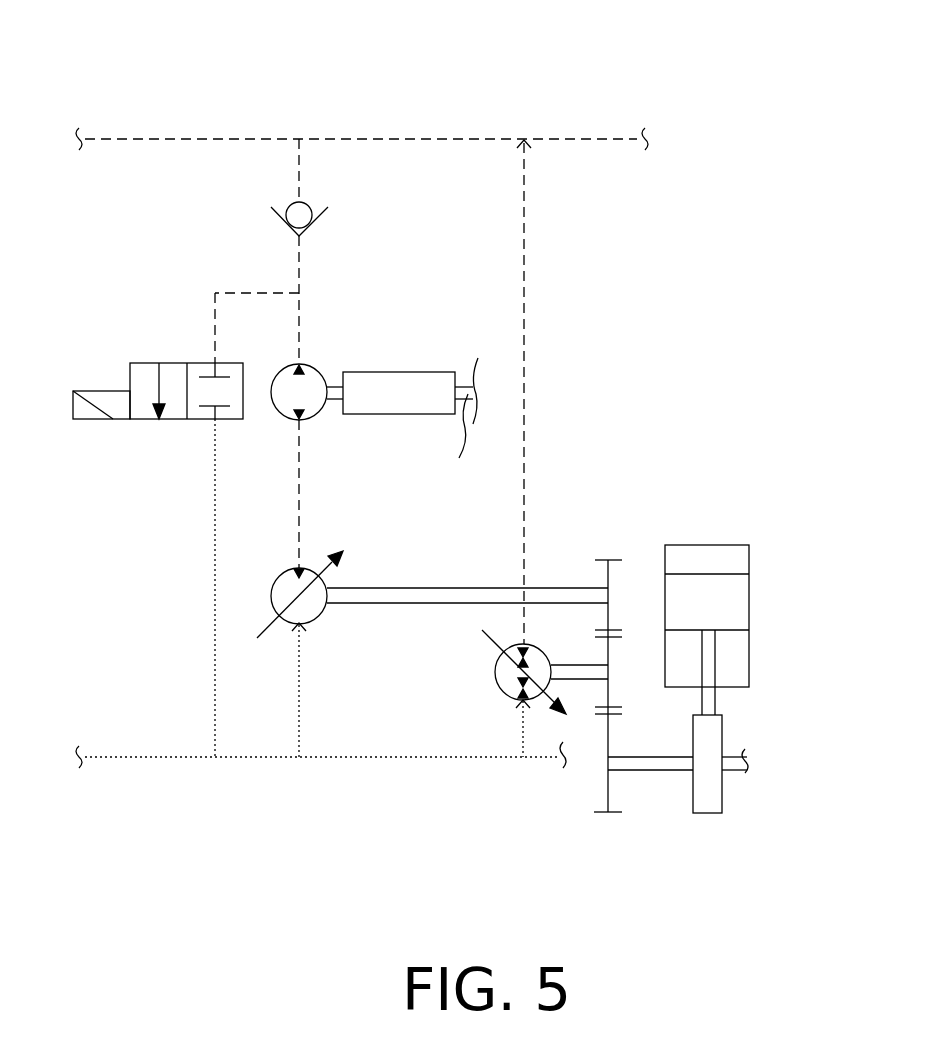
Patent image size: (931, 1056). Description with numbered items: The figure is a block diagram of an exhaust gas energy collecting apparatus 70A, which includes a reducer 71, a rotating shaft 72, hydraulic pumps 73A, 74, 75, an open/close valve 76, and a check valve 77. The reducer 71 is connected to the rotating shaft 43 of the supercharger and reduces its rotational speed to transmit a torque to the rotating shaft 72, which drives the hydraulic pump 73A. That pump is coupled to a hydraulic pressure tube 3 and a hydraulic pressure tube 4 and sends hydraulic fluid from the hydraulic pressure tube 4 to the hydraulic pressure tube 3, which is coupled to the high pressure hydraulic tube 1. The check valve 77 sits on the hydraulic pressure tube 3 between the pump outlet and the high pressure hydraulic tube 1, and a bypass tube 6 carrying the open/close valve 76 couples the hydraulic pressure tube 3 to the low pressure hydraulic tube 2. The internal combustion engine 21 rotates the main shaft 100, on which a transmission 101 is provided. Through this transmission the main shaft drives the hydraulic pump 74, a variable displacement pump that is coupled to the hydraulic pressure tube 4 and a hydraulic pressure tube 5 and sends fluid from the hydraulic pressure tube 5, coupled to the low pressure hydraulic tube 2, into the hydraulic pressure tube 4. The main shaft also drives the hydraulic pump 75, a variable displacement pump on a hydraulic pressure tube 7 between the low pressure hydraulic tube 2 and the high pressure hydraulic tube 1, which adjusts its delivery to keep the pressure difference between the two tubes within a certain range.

The exhaust gas energy collecting apparatus 70A is at (760, 46).
The high pressure hydraulic tube 1 is at (383, 137).
The low pressure hydraulic tube 2 is at (389, 759).
The hydraulic pressure tube 3 is at (302, 268).
The hydraulic pressure tube 4 is at (305, 503).
The hydraulic pressure tube 5 is at (300, 670).
The bypass tube 6 is at (209, 490).
The hydraulic pressure tube 7 is at (527, 352).
The internal combustion engine 21 is at (750, 597).
The rotating shaft 43 is at (467, 426).
The reducer 71 is at (388, 372).
The rotating shaft 72 is at (328, 383).
The hydraulic pump 73A is at (323, 414).
The hydraulic pump 74 is at (320, 618).
The hydraulic pump 75 is at (499, 684).
The open/close valve 76 is at (177, 363).
The check valve 77 is at (316, 212).
The main shaft 100 is at (670, 763).
The transmission 101 is at (590, 798).